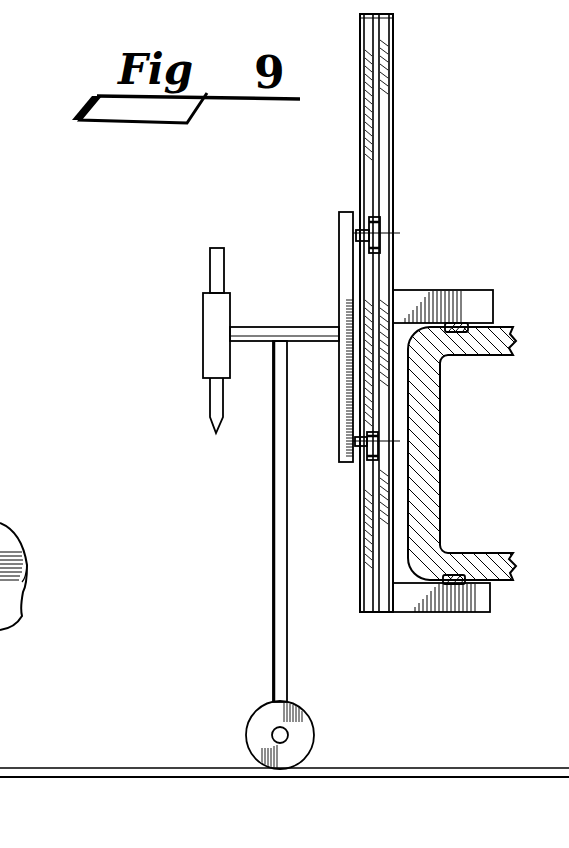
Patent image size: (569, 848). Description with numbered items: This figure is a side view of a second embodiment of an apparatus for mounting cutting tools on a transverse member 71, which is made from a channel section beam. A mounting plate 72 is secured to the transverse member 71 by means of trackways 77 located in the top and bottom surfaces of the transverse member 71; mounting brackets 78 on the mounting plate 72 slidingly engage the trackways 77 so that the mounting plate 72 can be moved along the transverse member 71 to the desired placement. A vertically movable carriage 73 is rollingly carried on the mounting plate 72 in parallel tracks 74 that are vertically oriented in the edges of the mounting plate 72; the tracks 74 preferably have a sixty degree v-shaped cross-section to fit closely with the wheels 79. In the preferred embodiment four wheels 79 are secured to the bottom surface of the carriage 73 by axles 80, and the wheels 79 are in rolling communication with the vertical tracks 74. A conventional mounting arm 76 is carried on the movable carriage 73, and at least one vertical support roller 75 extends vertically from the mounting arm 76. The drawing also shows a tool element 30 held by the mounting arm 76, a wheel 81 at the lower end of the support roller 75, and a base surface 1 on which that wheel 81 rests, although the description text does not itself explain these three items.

The base surface 1 is at (415, 770).
The stylus point 30 is at (210, 400).
The transverse member 71 is at (432, 397).
The mounting plate 72 is at (394, 98).
The vertically movable carriage 73 is at (339, 277).
The parallel tracks 74 is at (378, 28).
The vertical support roller 75 is at (273, 588).
The mounting arm 76 is at (203, 320).
The trackways 77 is at (462, 322).
The mounting brackets 78 is at (432, 290).
The wheels 79 is at (380, 233).
The axles 80 is at (356, 233).
The wheel 81 is at (310, 730).